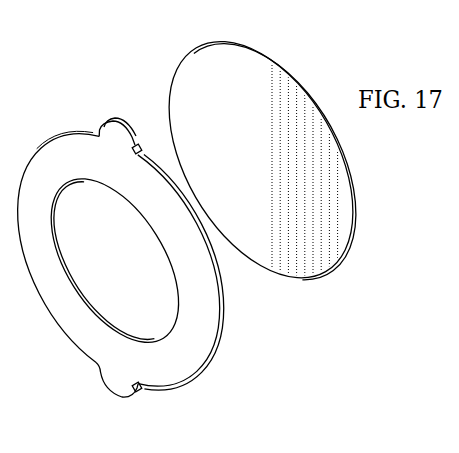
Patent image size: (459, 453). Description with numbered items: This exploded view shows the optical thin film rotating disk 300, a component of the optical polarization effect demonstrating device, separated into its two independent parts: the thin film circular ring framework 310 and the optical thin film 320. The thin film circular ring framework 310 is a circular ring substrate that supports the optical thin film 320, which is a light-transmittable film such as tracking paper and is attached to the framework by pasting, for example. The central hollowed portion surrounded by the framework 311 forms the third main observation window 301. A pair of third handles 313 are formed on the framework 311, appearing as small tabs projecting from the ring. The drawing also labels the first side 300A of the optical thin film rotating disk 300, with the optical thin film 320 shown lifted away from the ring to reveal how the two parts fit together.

The optical thin film rotating disk 300 is at (165, 40).
The thin film circular ring framework 310 is at (121, 255).
The framework 311 is at (119, 260).
The third main observation window 301 is at (115, 260).
The third handles 313 is at (112, 138).
The first side 300A is at (185, 406).
The optical thin film 320 is at (261, 159).